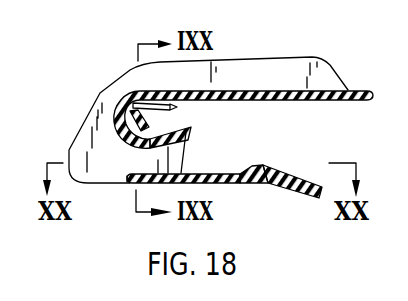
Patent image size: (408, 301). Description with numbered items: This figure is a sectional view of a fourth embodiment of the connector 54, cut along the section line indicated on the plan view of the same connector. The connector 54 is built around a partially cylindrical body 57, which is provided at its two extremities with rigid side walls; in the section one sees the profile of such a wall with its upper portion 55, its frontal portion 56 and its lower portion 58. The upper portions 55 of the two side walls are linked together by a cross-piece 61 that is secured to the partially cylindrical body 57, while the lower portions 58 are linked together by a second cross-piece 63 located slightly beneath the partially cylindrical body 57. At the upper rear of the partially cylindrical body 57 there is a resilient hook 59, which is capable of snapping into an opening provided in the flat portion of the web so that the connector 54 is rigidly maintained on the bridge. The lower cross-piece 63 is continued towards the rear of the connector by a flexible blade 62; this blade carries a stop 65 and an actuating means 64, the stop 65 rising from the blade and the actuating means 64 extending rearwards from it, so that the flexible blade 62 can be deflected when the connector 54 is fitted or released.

The connector 54 is at (293, 54).
The upper portion 55 is at (332, 72).
The frontal portion 56 is at (82, 148).
The partially cylindrical body 57 is at (118, 107).
The lower portion 58 is at (183, 142).
The resilient hook 59 is at (174, 107).
The cross-piece 61 is at (269, 91).
The flexible blade 62 is at (214, 187).
The cross-piece 63 is at (132, 186).
The actuating means 64 is at (296, 194).
The stop 65 is at (268, 166).